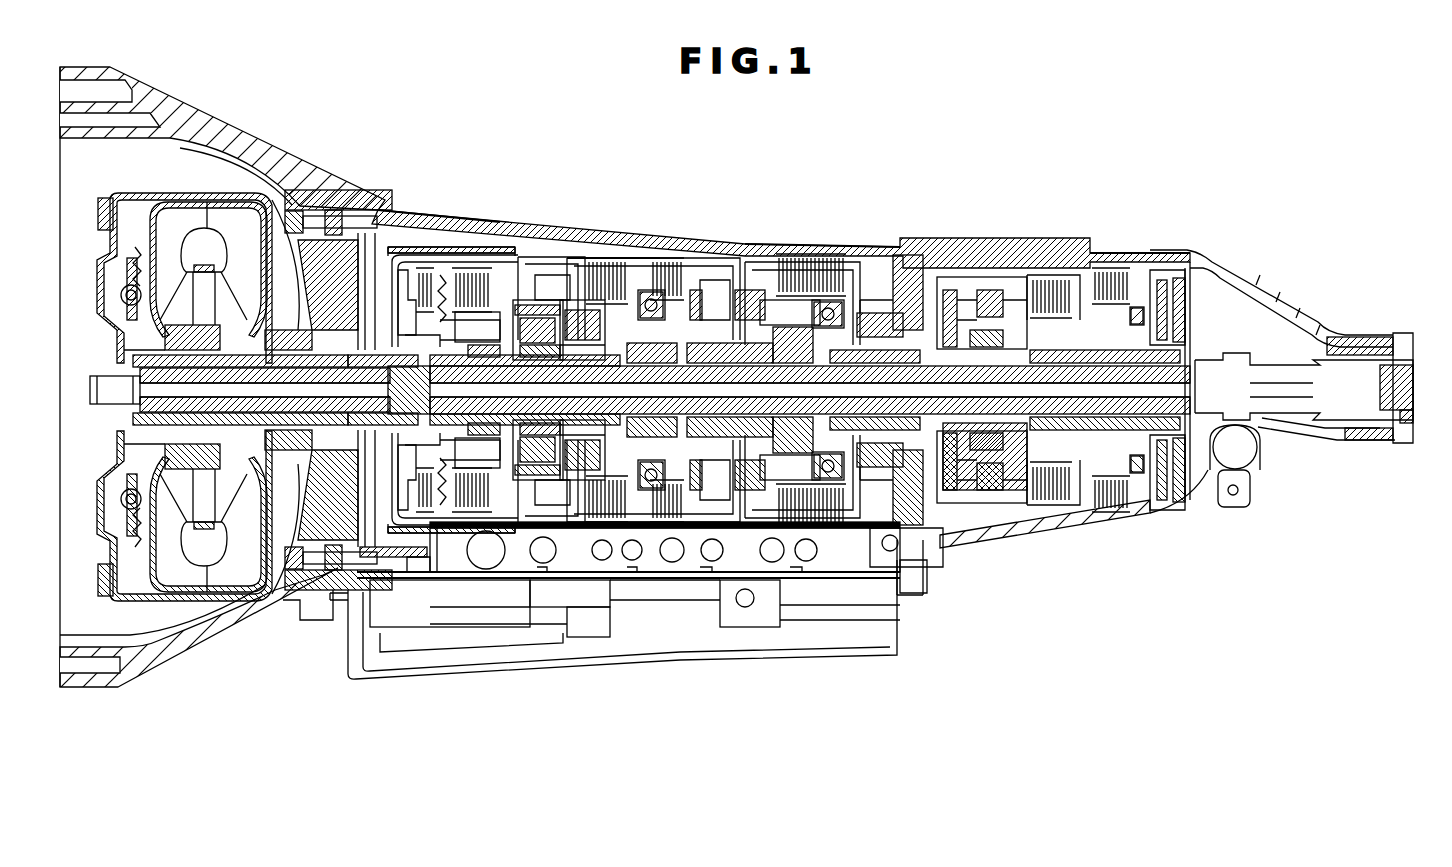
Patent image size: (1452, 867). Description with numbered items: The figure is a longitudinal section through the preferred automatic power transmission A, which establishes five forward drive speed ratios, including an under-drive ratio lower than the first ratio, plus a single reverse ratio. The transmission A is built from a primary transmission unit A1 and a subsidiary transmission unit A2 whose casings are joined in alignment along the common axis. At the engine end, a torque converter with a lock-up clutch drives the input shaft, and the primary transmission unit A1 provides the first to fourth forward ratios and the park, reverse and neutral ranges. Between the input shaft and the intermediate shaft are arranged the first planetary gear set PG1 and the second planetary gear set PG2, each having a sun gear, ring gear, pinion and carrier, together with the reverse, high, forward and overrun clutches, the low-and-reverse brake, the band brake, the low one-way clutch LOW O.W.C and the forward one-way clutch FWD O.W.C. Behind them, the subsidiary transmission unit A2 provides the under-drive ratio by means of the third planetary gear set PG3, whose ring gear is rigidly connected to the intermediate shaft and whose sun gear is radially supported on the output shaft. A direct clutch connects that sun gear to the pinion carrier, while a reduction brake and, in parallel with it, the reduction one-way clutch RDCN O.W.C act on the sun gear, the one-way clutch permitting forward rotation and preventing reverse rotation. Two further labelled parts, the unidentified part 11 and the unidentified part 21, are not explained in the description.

The first planetary gear set PG1 is at (535, 330).
The transmission case 11 is at (496, 238).
The second planetary gear set PG2 is at (573, 300).
The primary transmission unit A1 is at (606, 234).
The forward one-way clutch FWD O.W.C is at (651, 288).
The automatic power transmission A is at (811, 146).
The low one-way clutch LOW O.W.C is at (826, 300).
The third planetary gear set PG3 is at (985, 300).
The subsidiary transmission unit A2 is at (1131, 248).
The reduction one-way clutch RDCN O.W.C is at (1137, 325).
The rear extension housing 21 is at (1192, 286).